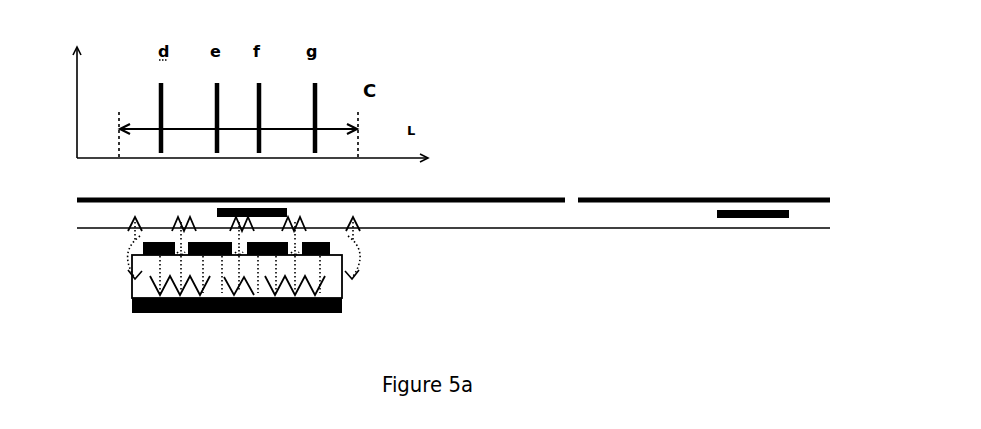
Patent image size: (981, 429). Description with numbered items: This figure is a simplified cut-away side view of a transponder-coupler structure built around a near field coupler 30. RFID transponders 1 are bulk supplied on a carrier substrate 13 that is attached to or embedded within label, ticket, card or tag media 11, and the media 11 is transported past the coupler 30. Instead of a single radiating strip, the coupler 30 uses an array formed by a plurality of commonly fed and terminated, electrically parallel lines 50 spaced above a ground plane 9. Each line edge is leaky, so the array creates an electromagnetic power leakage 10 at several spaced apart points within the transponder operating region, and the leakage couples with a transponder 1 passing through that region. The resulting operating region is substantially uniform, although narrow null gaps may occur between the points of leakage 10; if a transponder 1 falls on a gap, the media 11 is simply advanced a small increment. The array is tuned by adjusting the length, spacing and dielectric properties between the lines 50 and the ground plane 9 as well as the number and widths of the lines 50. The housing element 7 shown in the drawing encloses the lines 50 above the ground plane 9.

The RFID transponder 1 is at (280, 209).
The housing 7 is at (340, 288).
The ground plane 9 is at (240, 314).
The electromagnetic power leakage 10 is at (138, 236).
The media 11 is at (500, 198).
The carrier substrate 13 is at (528, 230).
The near field coupler 30 is at (236, 283).
The lines 50 is at (200, 258).